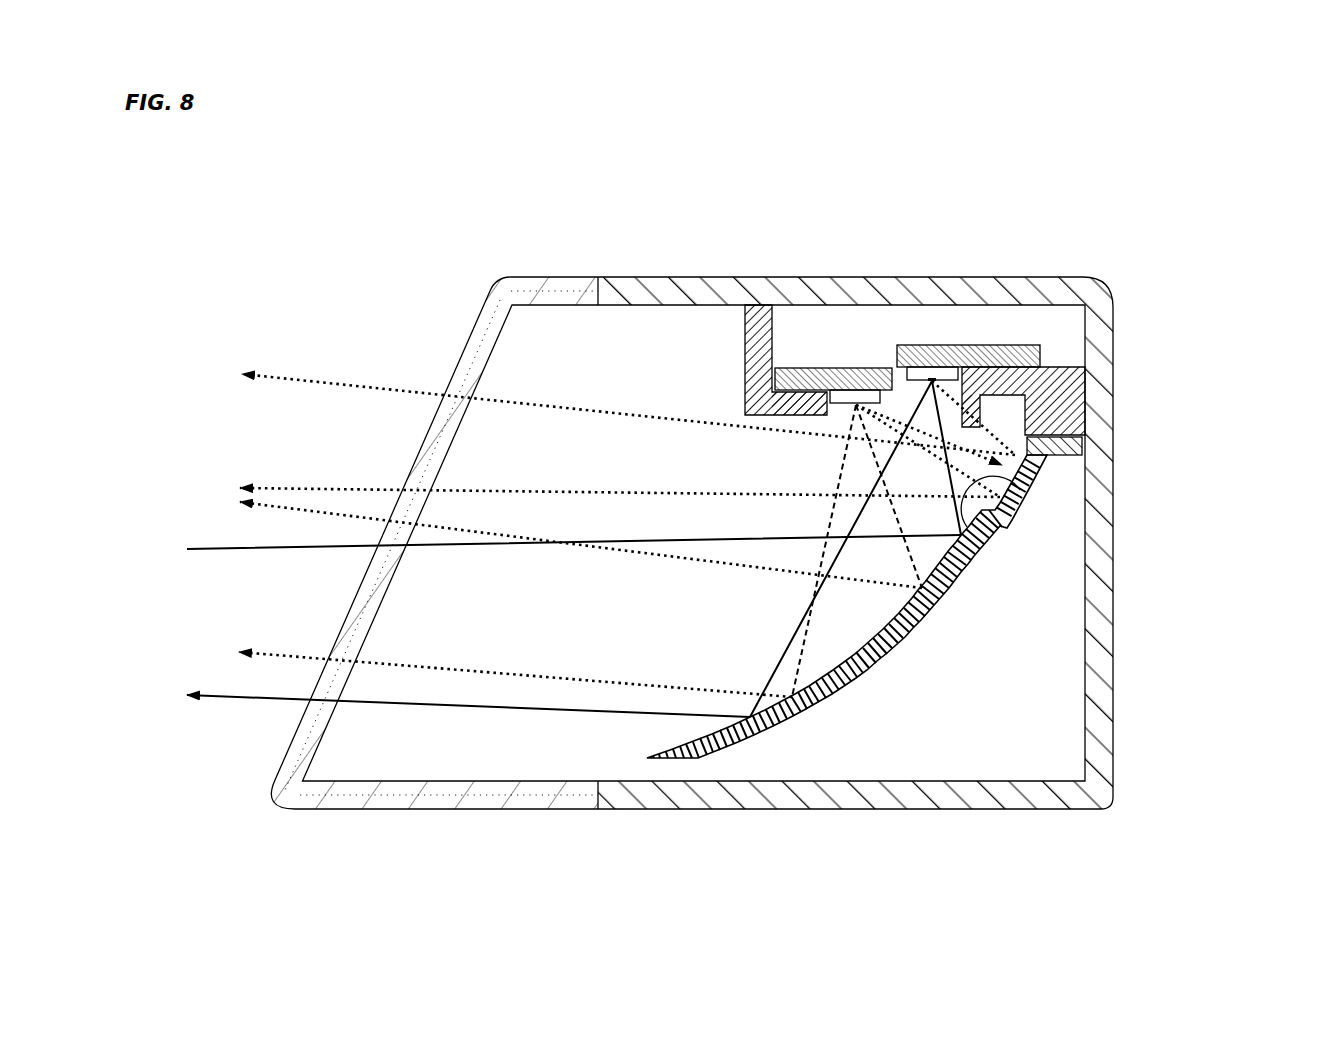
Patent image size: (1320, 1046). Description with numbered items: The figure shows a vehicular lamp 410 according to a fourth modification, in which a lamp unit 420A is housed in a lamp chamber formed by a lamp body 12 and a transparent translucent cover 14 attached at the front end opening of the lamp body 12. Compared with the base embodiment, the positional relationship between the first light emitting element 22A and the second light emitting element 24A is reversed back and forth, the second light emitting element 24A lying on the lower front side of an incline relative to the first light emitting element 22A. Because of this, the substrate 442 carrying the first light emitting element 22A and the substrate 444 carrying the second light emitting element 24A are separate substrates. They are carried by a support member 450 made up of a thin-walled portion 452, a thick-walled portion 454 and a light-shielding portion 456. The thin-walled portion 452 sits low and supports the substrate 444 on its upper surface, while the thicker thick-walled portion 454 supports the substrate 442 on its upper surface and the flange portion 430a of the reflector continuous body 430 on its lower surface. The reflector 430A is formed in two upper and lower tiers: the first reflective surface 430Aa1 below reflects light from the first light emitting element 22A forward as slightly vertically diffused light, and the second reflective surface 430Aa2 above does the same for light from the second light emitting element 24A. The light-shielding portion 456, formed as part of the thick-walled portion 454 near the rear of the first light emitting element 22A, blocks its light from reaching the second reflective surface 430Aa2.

The vehicular lamp 410 is at (372, 223).
The lamp body 12 is at (1117, 327).
The translucent cover 14 is at (455, 360).
The support member 450 is at (743, 394).
The thin-walled portion 452 is at (797, 408).
The thick-walled portion 454 is at (1063, 410).
The light-shielding portion 456 is at (966, 430).
The substrate 444 is at (810, 367).
The second light emitting element 24A is at (862, 373).
The substrate 442 is at (1030, 343).
The first light emitting element 22A is at (938, 356).
The reflector continuous body 430 is at (916, 606).
The reflector 430A is at (863, 606).
The first reflective surface 430Aa1 is at (858, 650).
The second reflective surface 430Aa2 is at (980, 538).
The flange portion 430a is at (1062, 455).
The lamp unit 420A is at (640, 505).